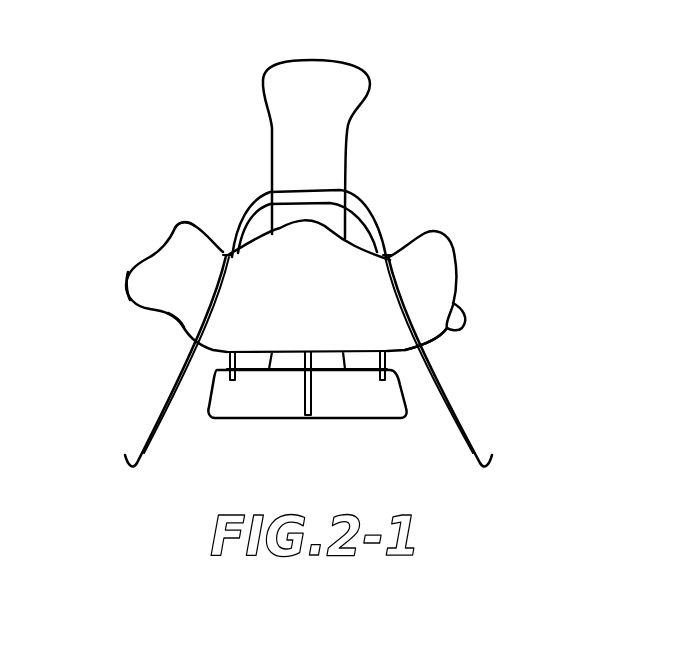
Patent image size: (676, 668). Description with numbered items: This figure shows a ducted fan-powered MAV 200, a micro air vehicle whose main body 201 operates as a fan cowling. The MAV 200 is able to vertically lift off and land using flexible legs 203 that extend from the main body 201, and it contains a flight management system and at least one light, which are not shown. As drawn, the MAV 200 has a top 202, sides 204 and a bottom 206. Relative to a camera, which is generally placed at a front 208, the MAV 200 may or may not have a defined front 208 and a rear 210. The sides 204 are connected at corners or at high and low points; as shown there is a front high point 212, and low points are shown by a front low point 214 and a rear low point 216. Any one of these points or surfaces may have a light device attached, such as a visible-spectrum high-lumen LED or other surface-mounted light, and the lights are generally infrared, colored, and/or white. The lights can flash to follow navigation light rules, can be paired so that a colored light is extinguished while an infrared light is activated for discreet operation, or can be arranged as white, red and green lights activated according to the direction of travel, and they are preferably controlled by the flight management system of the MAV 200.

The ducted fan-powered MAV 200 is at (480, 62).
The top 202 is at (338, 61).
The sides 204 is at (327, 270).
The main body 201 is at (140, 263).
The front high point 212 is at (173, 223).
The front 208 is at (123, 285).
The front low point 214 is at (177, 325).
The rear 210 is at (458, 284).
The rear low point 216 is at (455, 338).
The flexible legs 203 is at (163, 418).
The bottom 206 is at (320, 418).